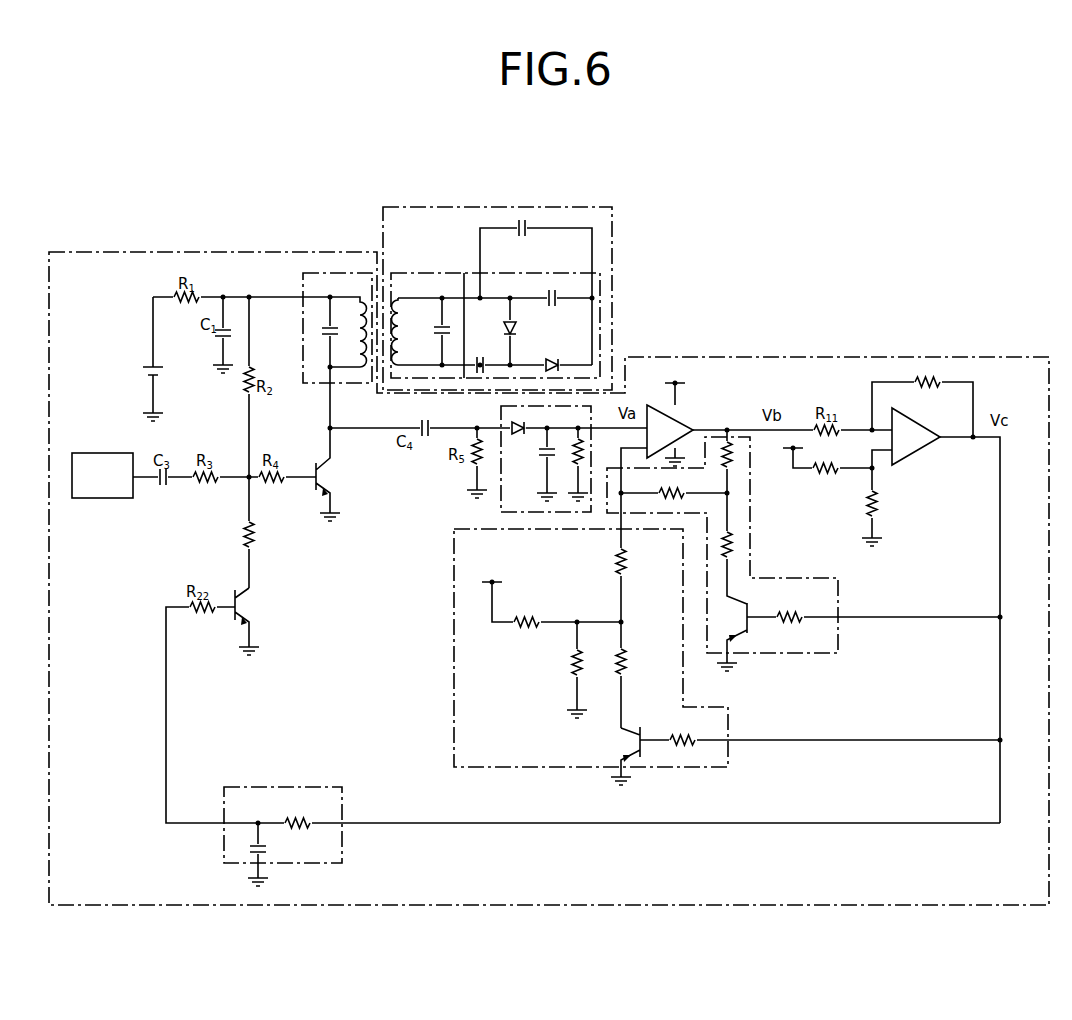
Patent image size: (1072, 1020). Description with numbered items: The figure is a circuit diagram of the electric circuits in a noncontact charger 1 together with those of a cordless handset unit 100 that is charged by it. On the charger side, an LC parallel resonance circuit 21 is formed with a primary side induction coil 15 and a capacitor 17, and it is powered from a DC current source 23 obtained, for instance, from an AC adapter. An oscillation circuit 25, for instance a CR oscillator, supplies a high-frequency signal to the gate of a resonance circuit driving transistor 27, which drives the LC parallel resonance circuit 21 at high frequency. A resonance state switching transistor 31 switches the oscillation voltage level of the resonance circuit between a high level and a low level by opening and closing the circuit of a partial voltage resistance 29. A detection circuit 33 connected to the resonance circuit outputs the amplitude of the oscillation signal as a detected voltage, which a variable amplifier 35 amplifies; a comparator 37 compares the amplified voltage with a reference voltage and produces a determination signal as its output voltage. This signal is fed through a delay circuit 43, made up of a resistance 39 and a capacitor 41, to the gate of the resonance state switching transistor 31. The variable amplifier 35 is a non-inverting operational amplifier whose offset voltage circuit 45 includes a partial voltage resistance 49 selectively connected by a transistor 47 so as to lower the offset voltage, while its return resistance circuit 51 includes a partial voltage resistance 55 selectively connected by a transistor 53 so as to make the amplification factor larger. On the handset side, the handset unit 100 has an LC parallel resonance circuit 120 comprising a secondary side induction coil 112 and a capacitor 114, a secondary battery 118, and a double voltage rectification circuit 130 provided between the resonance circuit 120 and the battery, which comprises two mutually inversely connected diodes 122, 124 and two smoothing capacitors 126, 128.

The noncontact charger 1 is at (840, 354).
The primary side induction coil 15 is at (362, 367).
The capacitor 17 is at (321, 333).
The LC parallel resonance circuit 21 is at (316, 269).
The DC current source 23 is at (140, 376).
The oscillation circuit 25 is at (105, 499).
The resonance circuit driving transistor 27 is at (325, 471).
The partial voltage resistance 29 is at (258, 537).
The resonance state switching transistor 31 is at (250, 607).
The detection circuit 33 is at (500, 419).
The variable amplifier 35 is at (690, 416).
The comparator 37 is at (936, 410).
The resistance 39 is at (280, 818).
The capacitor 41 is at (246, 848).
The delay circuit 43 is at (335, 786).
The offset voltage circuit 45 is at (733, 721).
The transistor 47 is at (646, 749).
The partial voltage resistance 49 is at (631, 656).
The return resistance circuit 51 is at (803, 550).
The transistor 53 is at (747, 605).
The partial voltage resistance 55 is at (740, 556).
The handset unit 100 is at (603, 206).
The secondary side induction coil 112 is at (405, 305).
The capacitor 114 is at (465, 300).
The secondary battery 118 is at (522, 226).
The LC parallel resonance circuit 120 is at (474, 268).
The diode 122 is at (513, 322).
The diode 124 is at (556, 366).
The smoothing capacitor 126 is at (480, 360).
The smoothing capacitor 128 is at (558, 302).
The double voltage rectification circuit 130 is at (603, 281).